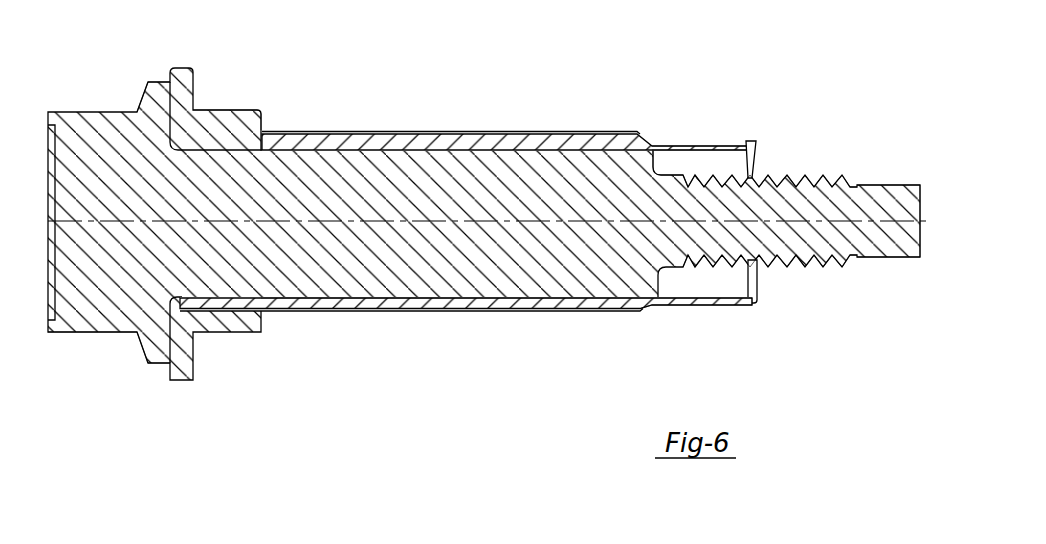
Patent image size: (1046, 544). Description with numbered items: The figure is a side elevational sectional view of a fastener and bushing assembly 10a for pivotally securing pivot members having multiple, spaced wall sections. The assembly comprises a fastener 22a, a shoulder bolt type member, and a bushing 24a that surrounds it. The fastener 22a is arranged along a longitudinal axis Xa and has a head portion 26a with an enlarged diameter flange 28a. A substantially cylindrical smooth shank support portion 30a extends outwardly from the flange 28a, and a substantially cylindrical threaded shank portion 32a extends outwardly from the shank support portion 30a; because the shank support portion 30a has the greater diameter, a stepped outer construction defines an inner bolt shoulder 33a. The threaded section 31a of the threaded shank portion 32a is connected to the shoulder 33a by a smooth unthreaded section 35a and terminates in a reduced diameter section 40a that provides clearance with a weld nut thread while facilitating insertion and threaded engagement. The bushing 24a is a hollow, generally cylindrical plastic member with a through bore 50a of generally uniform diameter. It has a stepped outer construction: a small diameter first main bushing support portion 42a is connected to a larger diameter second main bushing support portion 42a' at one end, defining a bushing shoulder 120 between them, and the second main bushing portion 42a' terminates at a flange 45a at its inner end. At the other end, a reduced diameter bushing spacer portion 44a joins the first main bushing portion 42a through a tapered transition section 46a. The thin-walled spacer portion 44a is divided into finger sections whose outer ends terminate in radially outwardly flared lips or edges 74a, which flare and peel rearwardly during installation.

The fastener and bushing assembly 10a is at (549, 101).
The fastener 22a is at (75, 123).
The head portion 26a is at (95, 320).
The enlarged diameter flange 28a is at (157, 87).
The flange 45a is at (184, 74).
The bushing 24a is at (229, 339).
The second main bushing support portion 42a' is at (228, 84).
The bushing shoulder 120 is at (262, 127).
The through bore 50a is at (337, 150).
The smooth unthreaded section 35a is at (674, 174).
The inner bolt shoulder 33a is at (671, 152).
The flared lips or edges 74a is at (753, 149).
The threaded section 31a is at (858, 192).
The threaded shank portion 32a is at (667, 272).
The reduced diameter section 40a is at (920, 185).
The first main bushing support portion 42a is at (466, 328).
The bushing spacer portion 44a is at (754, 308).
The tapered transition section 46a is at (653, 307).
The shank support portion 30a is at (653, 297).
The longitudinal axis Xa is at (923, 223).